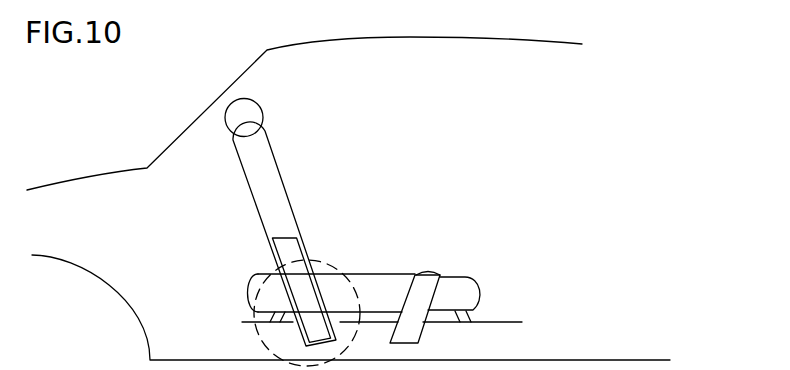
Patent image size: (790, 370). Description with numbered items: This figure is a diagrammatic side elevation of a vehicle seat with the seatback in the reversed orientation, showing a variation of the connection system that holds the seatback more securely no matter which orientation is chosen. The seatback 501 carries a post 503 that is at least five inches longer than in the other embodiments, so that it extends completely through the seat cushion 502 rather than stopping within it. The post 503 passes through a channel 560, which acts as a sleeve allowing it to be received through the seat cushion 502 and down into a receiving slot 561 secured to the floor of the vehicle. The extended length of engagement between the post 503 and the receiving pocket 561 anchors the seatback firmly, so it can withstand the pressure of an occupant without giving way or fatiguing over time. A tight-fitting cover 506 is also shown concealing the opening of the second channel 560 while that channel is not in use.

The seat back post / bar 501 is at (268, 173).
The post 503 is at (288, 253).
The seat cushion 502 is at (259, 284).
The tight-fitting cover 506 is at (428, 270).
The channels 560 is at (425, 297).
The receiving slots 561 is at (297, 333).